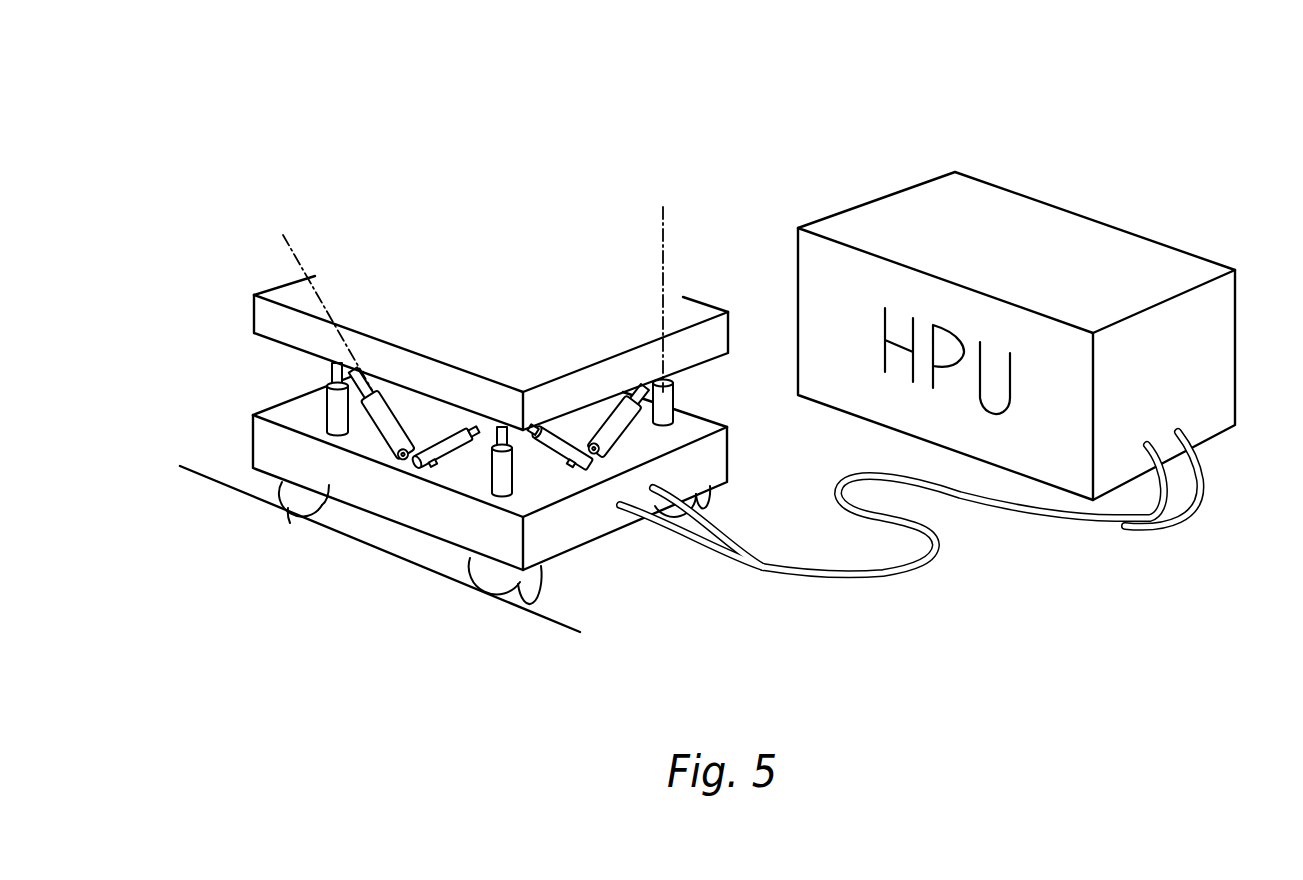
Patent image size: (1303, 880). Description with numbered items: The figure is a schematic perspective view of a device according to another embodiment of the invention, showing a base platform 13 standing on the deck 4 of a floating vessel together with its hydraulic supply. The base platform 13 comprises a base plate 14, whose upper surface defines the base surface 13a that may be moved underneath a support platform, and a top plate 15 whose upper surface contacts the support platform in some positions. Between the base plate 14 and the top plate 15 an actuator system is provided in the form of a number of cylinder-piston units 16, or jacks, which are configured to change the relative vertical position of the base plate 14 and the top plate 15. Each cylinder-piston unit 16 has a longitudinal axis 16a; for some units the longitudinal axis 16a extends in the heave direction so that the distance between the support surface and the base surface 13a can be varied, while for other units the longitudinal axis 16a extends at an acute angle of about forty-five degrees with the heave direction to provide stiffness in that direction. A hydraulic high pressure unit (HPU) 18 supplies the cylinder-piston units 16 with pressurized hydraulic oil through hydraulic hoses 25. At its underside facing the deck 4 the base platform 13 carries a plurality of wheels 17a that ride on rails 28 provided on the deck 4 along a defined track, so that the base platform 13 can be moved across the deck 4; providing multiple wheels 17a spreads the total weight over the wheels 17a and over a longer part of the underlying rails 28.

The base platform 13 is at (230, 257).
The base surface 13a is at (567, 492).
The base plate 14 is at (272, 441).
The top plate 15 is at (272, 317).
The cylinder-piston units 16 is at (335, 408).
The longitudinal axis 16a is at (293, 247).
The wheels 17a is at (303, 502).
The hydraulic high pressure unit (HPU) 18 is at (1062, 237).
The hydraulic hoses 25 is at (1162, 512).
The rails 28 is at (562, 628).
The deck 4 is at (690, 637).